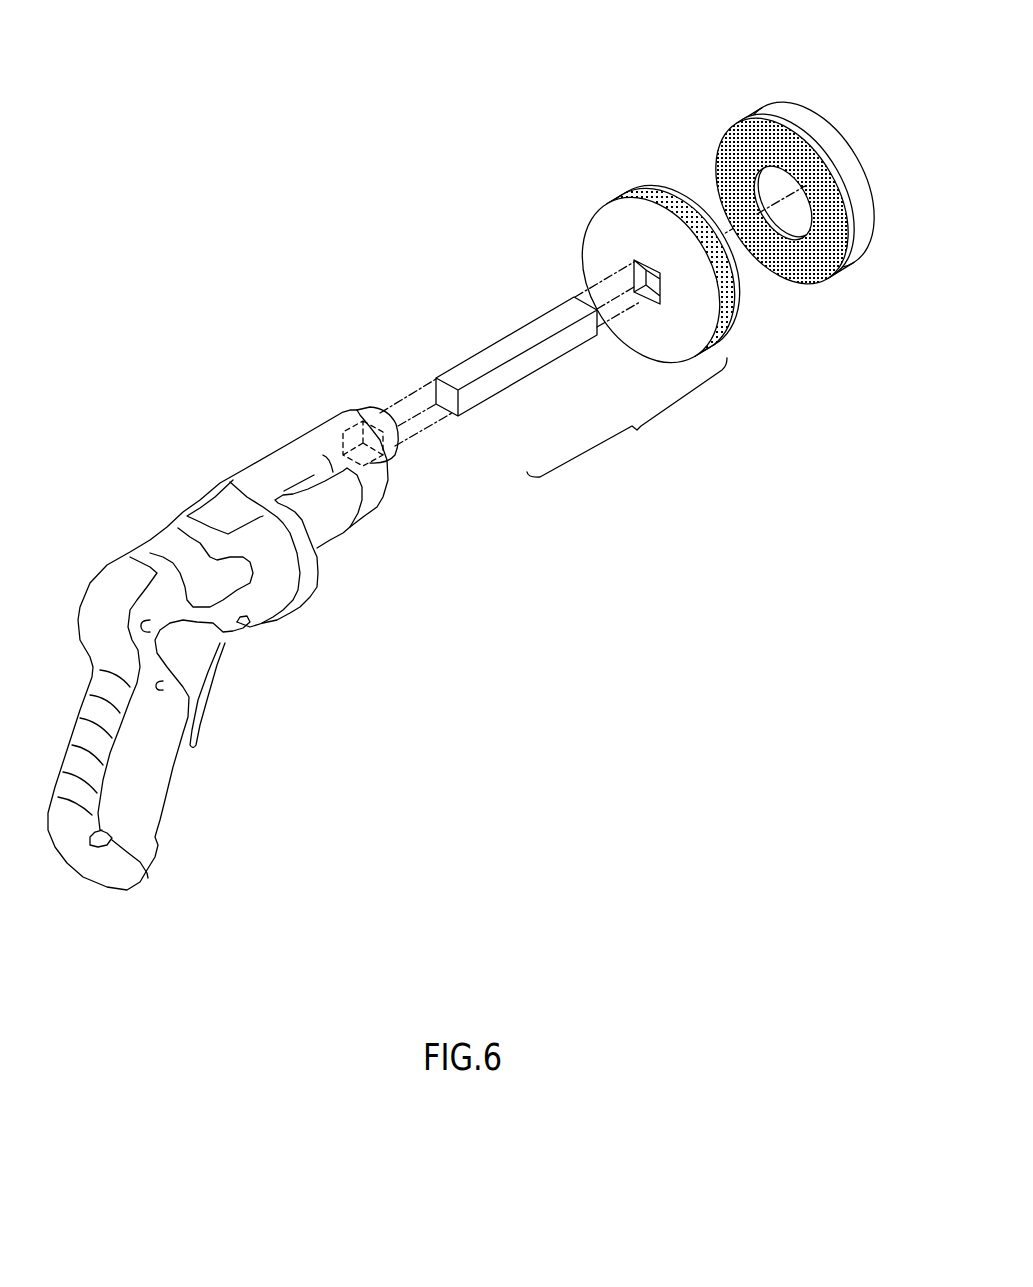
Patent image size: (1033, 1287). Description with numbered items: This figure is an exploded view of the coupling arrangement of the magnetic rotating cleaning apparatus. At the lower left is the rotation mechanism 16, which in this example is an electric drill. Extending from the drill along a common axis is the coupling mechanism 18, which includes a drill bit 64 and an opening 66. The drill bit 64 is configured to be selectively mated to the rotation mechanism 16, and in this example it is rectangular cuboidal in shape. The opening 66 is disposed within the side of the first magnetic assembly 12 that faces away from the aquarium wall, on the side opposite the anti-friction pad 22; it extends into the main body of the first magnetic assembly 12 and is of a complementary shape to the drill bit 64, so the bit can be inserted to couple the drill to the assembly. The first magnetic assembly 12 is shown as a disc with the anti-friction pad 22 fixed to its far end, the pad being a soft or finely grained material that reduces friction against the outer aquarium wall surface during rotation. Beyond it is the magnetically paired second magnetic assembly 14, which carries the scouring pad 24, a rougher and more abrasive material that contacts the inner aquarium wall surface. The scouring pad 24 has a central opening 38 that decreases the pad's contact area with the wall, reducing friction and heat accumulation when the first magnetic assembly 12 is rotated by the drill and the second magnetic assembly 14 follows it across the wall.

The first magnetic assembly 12 is at (630, 197).
The second magnetic assembly 14 is at (795, 202).
The rotation mechanism 16 is at (344, 516).
The coupling mechanism 18 is at (627, 417).
The anti-friction pad 22 is at (737, 312).
The scouring pad 24 is at (819, 278).
The opening 38 is at (779, 192).
The drill bit 64 is at (520, 372).
The opening 66 is at (652, 293).